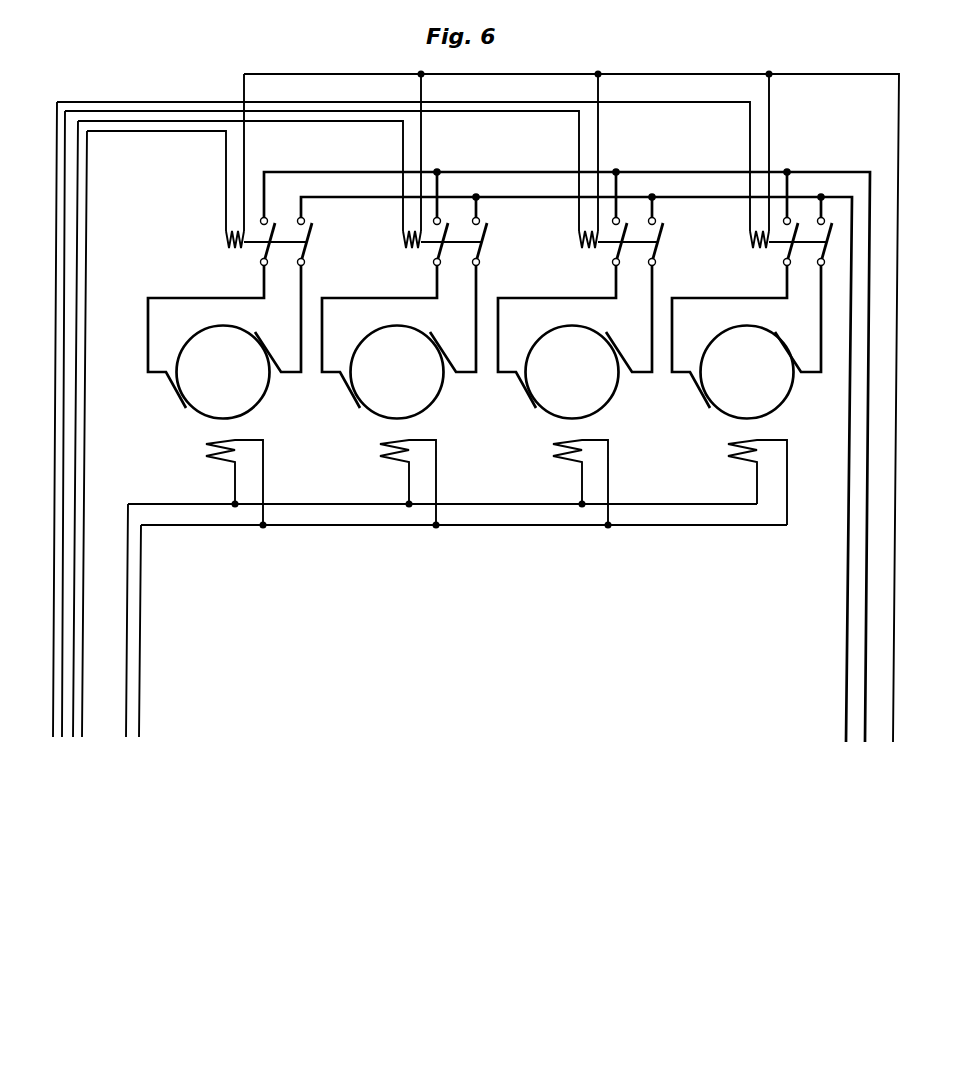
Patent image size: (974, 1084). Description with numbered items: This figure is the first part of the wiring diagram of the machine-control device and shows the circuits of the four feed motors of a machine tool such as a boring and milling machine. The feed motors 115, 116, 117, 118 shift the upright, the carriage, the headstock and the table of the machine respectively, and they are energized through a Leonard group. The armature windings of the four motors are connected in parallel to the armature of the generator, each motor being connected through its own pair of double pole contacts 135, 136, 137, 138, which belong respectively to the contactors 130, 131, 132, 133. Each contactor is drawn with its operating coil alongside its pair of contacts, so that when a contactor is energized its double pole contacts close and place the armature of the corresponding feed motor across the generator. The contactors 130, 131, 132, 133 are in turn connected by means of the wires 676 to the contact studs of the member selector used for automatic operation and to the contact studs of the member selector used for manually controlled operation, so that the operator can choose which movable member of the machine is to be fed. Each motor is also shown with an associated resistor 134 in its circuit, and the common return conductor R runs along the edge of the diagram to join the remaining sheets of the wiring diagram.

The feed motor 115 is at (746, 342).
The feed motor 116 is at (575, 342).
The feed motor 117 is at (399, 342).
The feed motor 118 is at (224, 342).
The contactor 130 is at (748, 242).
The contactor 131 is at (577, 236).
The contactor 132 is at (401, 236).
The contactor 133 is at (224, 236).
The resistor 134 is at (205, 455).
The double pole contacts 135 is at (804, 244).
The double pole contacts 136 is at (635, 244).
The double pole contacts 137 is at (456, 245).
The double pole contacts 138 is at (281, 244).
The wires 676 is at (57, 261).
The return conductor R is at (900, 251).